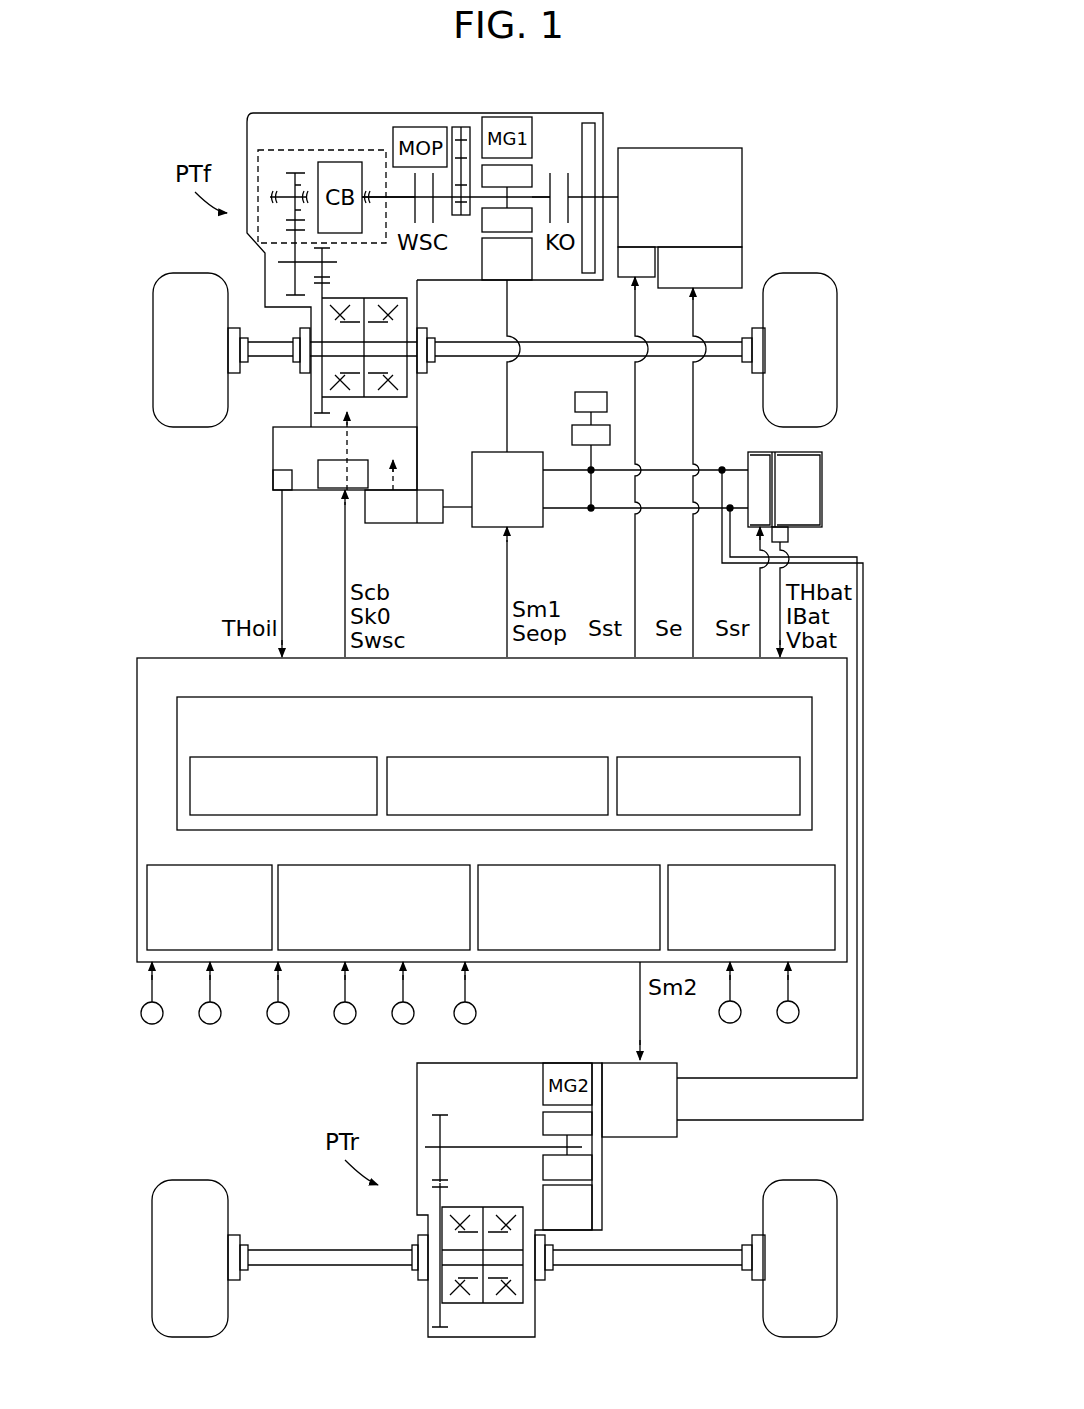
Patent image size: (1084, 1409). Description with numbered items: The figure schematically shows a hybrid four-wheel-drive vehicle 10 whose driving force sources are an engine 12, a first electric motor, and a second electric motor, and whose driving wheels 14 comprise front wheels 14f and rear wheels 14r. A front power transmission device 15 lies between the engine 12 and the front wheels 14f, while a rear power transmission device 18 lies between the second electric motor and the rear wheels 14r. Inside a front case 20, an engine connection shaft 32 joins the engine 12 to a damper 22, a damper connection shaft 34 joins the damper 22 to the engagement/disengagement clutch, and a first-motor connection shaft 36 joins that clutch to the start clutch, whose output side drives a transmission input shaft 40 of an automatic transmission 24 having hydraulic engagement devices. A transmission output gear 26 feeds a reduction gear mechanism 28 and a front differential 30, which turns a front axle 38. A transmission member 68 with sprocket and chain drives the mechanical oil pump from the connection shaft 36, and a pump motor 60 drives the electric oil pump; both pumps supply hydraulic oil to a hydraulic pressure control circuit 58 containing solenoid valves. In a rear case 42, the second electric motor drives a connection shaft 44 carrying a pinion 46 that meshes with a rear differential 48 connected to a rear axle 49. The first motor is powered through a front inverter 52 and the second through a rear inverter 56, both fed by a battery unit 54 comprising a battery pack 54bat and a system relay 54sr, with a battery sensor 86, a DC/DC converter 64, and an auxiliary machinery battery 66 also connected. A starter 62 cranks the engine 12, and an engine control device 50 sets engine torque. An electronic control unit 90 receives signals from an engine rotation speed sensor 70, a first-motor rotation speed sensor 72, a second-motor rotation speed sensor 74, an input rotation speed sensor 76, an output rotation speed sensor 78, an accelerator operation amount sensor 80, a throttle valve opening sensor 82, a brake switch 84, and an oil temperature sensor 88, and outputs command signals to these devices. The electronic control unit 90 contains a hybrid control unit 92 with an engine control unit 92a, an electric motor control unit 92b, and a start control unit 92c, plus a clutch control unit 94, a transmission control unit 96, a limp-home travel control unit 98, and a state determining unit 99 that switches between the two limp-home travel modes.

The vehicle 10 is at (681, 96).
The engine 12 is at (684, 153).
The driving wheels 14 is at (336, 1364).
The front wheels 14f is at (205, 282).
The rear wheels 14r is at (205, 1190).
The front power transmission device 15 is at (395, 108).
The rear power transmission device 18 is at (519, 1048).
The front case 20 is at (306, 113).
The damper 22 is at (588, 273).
The automatic transmission 24 is at (293, 170).
The transmission output gear 26 is at (268, 173).
The reduction gear mechanism 28 is at (349, 262).
The front differential 30 is at (384, 402).
The engine connection shaft 32 is at (604, 190).
The damper connection shaft 34 is at (572, 175).
The MG1 connection shaft 36 is at (538, 195).
The front axle 38 is at (263, 357).
The transmission input shaft 40 is at (380, 193).
The rear case 42 is at (418, 1134).
The MG2 connection shaft 44 is at (478, 1145).
The pinion 46 is at (433, 1175).
The rear differential 48 is at (503, 1312).
The rear axle 49 is at (337, 1266).
The engine control device 50 is at (713, 276).
The front inverter 52 is at (530, 530).
The battery unit 54 is at (767, 440).
The system relay 54sr is at (762, 463).
The battery pack 54bat is at (793, 463).
The rear inverter 56 is at (637, 1138).
The hydraulic pressure control circuit 58 is at (275, 448).
The pump motor 60 is at (435, 525).
The starter 62 is at (645, 272).
The DC/DC converter 64 is at (578, 434).
The auxiliary machinery battery 66 is at (586, 398).
The transmission member 68 is at (462, 120).
The engine rotation speed sensor 70 is at (155, 1023).
The MG1 rotation speed sensor 72 is at (213, 1023).
The MG2 rotation speed sensor 74 is at (281, 1023).
The input rotation speed sensor 76 is at (348, 1023).
The output rotation speed sensor 78 is at (406, 1023).
The accelerator operation amount sensor 80 is at (468, 1023).
The throttle valve opening sensor 82 is at (733, 1022).
The brake switch 84 is at (791, 1022).
The battery sensor 86 is at (790, 536).
The oil temperature sensor 88 is at (278, 478).
The electronic control unit 90 is at (492, 796).
The hybrid control unit 92 is at (497, 751).
The engine control unit 92a is at (311, 760).
The electric motor control unit 92b is at (524, 760).
The start control unit 92c is at (737, 762).
The clutch control unit 94 is at (227, 870).
The transmission control unit 96 is at (423, 870).
The limp-home travel control unit 98 is at (612, 872).
The state determining unit 99 is at (784, 872).